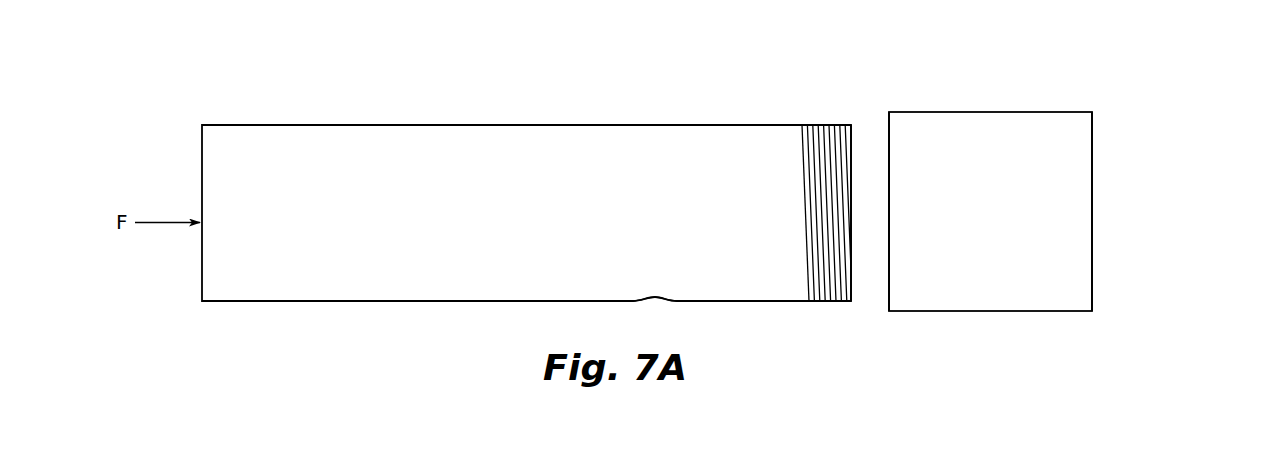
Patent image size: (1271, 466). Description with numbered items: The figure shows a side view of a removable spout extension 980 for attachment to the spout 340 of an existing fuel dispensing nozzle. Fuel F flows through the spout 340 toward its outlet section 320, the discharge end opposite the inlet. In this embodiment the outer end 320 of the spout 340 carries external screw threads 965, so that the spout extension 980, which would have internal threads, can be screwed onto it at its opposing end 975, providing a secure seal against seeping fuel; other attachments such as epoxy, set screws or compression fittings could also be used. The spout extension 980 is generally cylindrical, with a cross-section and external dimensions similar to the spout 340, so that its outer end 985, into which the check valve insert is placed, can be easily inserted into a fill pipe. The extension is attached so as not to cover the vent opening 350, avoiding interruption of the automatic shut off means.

The spout 340 is at (477, 209).
The vent opening 350 is at (656, 301).
The external screw threads 965 is at (815, 286).
The outlet section 320 is at (858, 276).
The opposing end 975 is at (886, 165).
The spout extension 980 is at (1022, 270).
The outer end 985 is at (1096, 219).